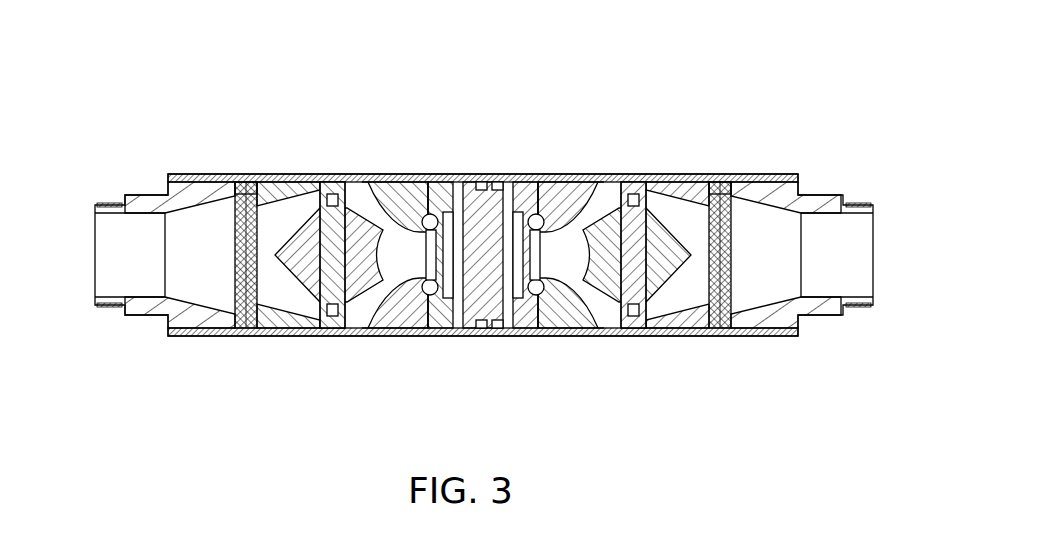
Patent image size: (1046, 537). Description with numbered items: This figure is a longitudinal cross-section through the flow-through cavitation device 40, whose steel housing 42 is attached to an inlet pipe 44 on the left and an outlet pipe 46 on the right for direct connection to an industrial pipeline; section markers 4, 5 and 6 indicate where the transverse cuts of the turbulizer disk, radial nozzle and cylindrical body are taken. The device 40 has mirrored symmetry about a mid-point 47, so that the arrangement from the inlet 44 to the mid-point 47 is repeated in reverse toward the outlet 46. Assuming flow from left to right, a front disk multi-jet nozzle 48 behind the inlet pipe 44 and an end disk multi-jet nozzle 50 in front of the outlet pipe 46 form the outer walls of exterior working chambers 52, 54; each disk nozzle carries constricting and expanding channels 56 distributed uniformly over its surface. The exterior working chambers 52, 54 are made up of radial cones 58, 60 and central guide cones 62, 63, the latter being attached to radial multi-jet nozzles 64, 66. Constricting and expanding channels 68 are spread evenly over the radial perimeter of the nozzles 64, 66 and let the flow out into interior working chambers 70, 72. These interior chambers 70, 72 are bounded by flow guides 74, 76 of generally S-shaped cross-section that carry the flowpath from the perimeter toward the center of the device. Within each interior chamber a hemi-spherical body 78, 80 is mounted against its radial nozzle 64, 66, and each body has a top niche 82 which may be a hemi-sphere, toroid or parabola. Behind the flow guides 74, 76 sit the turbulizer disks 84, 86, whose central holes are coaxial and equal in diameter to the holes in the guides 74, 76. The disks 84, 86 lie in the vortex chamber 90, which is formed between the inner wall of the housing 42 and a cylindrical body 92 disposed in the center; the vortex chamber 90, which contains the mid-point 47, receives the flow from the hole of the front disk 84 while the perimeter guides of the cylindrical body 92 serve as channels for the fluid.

The flow-through cavitation device 40 is at (370, 62).
The steel housing 42 is at (484, 308).
The inlet pipe 44 is at (108, 247).
The outlet pipe 46 is at (856, 245).
The mid-point 47 is at (470, 106).
The front disk multi-jet nozzle 48 is at (218, 278).
The end disk multi-jet nozzle 50 is at (747, 278).
The exterior working chamber 52 is at (234, 155).
The exterior working chamber 54 is at (732, 155).
The constricting and expanding channels 56 is at (483, 164).
The radial cone 58 is at (197, 292).
The radial cone 60 is at (770, 292).
The central guide cone 62 is at (299, 193).
The central guide cone 63 is at (668, 193).
The radial multi-jet nozzle 64 is at (295, 278).
The radial multi-jet nozzle 66 is at (673, 278).
The constricting and expanding channels 68 is at (483, 193).
The interior working chamber 70 is at (383, 355).
The interior working chamber 72 is at (584, 357).
The flow guide 74 is at (392, 322).
The flow guide 76 is at (524, 301).
The hemi-spherical body 78 is at (374, 296).
The hemi-spherical body 80 is at (592, 296).
The top niche 82 is at (480, 196).
The turbulizer disk 84 is at (417, 229).
The turbulizer disk 86 is at (547, 229).
The vortex chamber 90 is at (443, 348).
The cylindrical body 92 is at (449, 214).
The section line 4- 4 is at (528, 152).
The section line 5- 5 is at (334, 145).
The section line 6- 6 is at (485, 175).